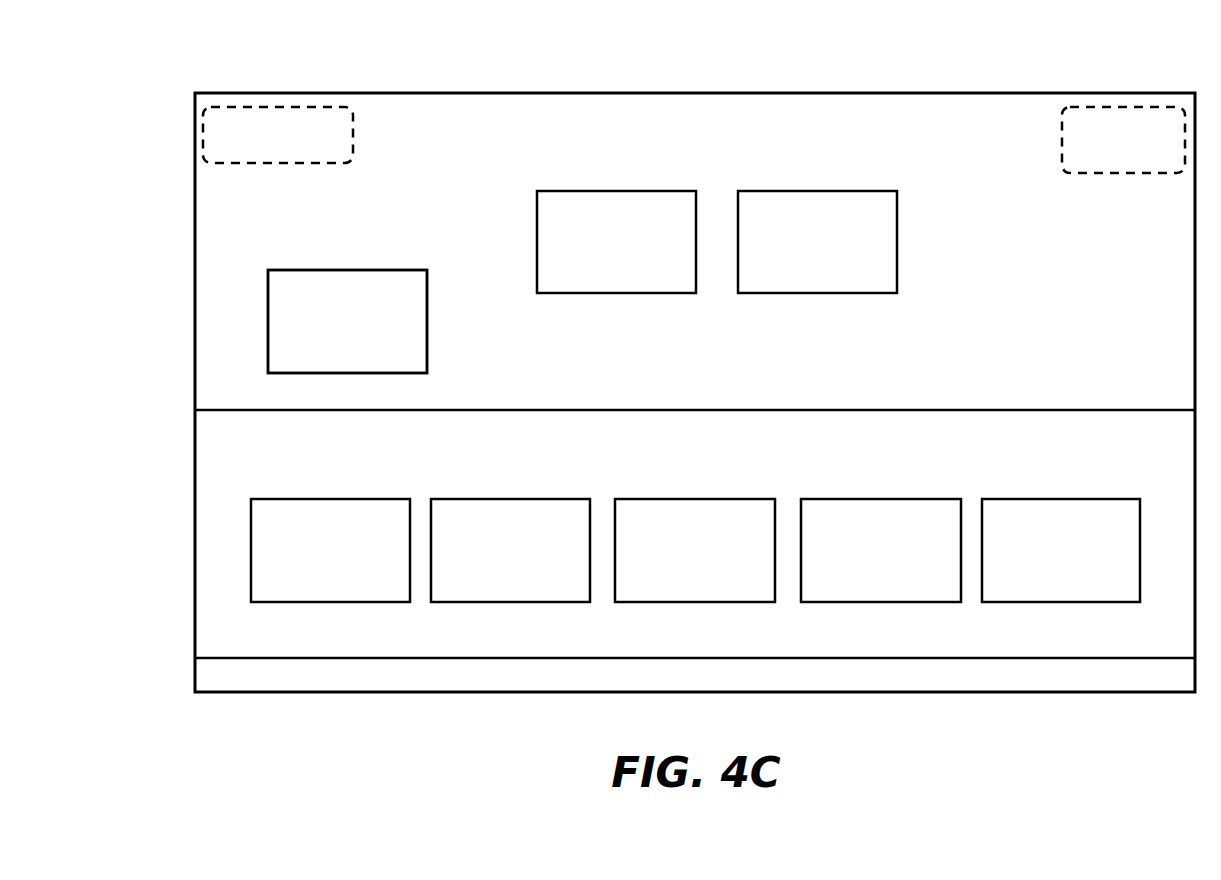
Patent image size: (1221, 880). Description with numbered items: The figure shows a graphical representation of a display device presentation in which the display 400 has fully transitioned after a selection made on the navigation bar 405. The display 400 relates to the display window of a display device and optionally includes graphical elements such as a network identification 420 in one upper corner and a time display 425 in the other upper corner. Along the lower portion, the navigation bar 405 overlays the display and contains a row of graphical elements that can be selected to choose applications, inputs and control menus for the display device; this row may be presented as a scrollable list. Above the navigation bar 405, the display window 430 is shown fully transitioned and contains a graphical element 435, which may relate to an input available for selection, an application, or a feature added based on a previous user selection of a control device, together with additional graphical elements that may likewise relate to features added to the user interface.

The display 400 is at (240, 84).
The navigation bar 405 is at (207, 486).
The network identification 420 is at (295, 140).
The time display 425 is at (1087, 138).
The display window 430 is at (323, 238).
The graphical element 435 is at (385, 292).